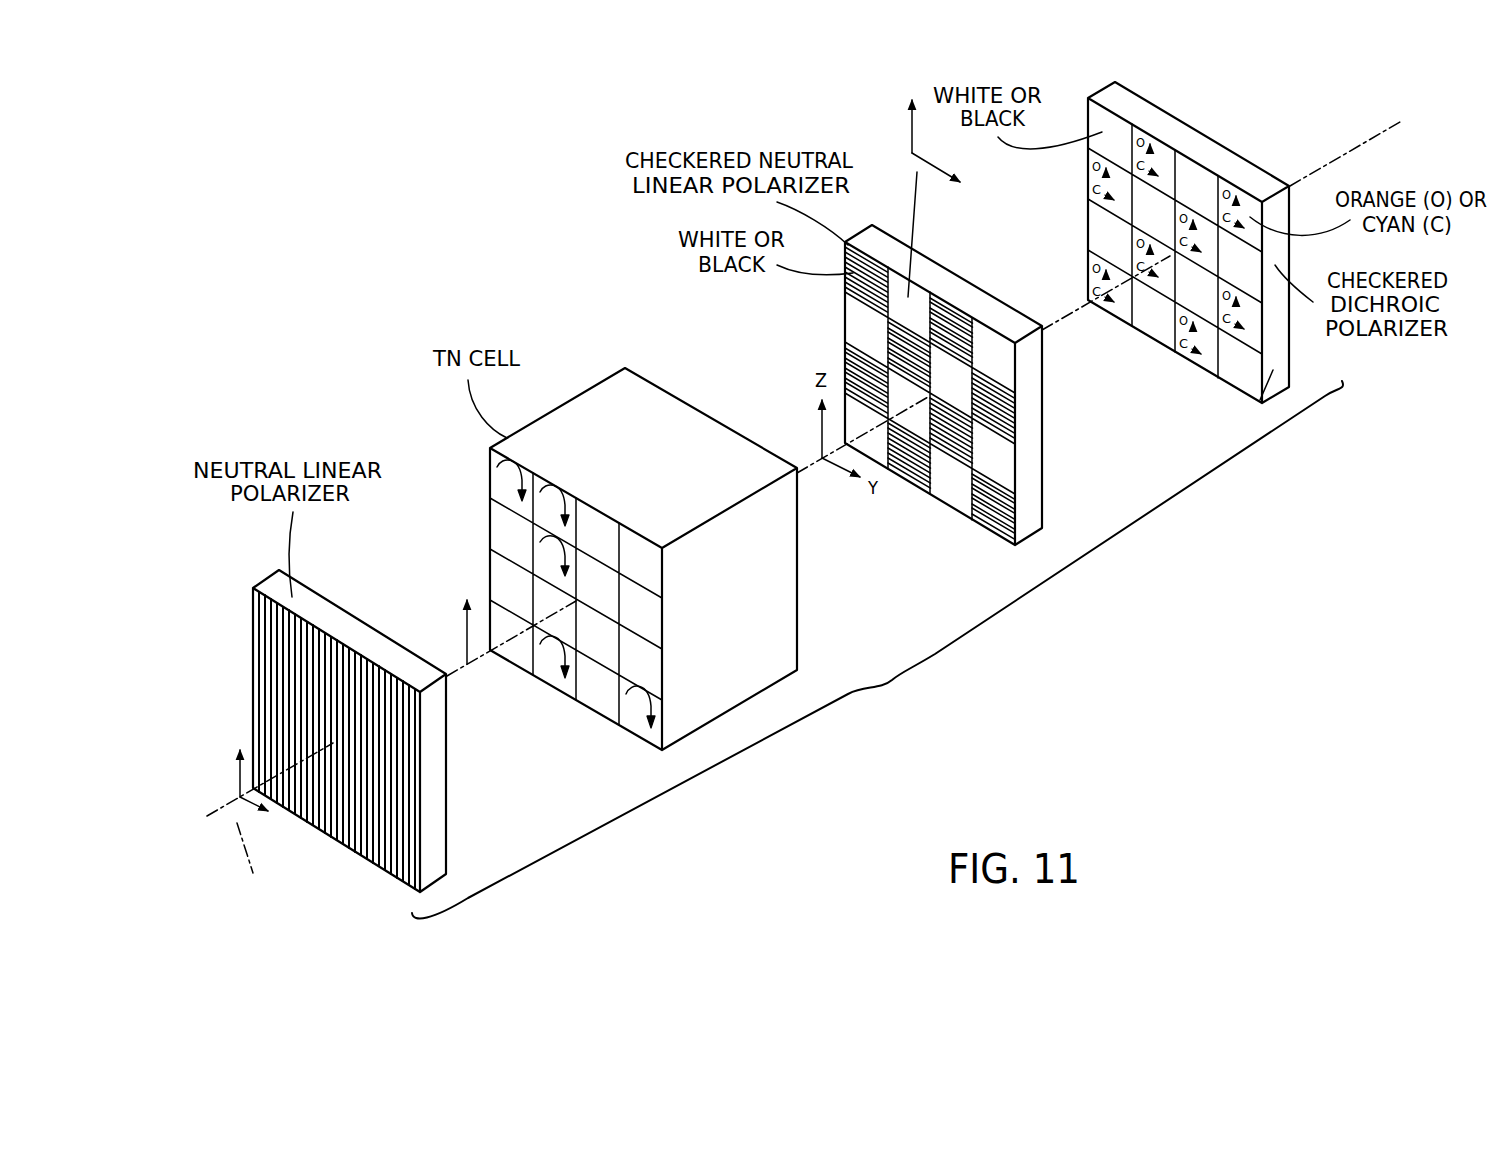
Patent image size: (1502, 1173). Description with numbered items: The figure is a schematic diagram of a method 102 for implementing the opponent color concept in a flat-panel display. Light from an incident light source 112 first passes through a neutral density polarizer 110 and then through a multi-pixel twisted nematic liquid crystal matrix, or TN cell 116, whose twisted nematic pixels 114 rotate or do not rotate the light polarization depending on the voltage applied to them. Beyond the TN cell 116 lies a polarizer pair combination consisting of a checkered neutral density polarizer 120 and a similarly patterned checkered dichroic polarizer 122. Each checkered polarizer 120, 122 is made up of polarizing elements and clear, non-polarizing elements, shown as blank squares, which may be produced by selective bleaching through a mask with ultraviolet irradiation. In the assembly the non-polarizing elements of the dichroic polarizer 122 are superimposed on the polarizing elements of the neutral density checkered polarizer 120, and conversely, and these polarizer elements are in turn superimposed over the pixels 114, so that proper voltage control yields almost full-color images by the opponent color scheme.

The method for implementing the opponent color concept 102 is at (1010, 642).
The neutral density polarizer 110 is at (263, 662).
The incident light source 112 is at (210, 810).
The pixels 114 is at (553, 678).
The multi-pixel twisted nematic liquid crystal matrix 116 is at (693, 587).
The checkered neutral density polarizer 120 is at (1030, 450).
The checkered dichroic polarizer 122 is at (1262, 400).